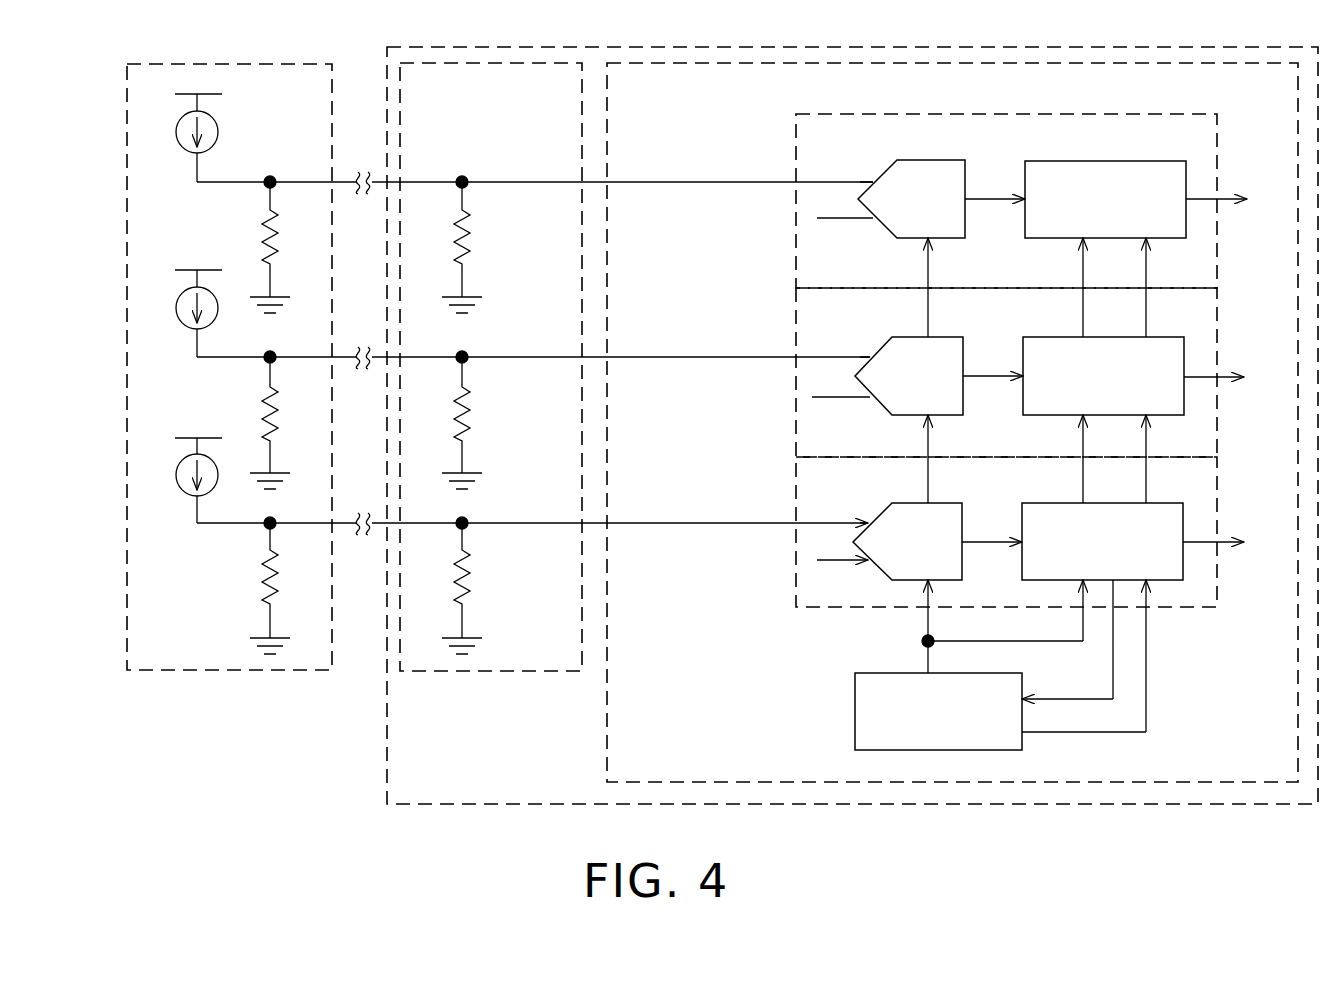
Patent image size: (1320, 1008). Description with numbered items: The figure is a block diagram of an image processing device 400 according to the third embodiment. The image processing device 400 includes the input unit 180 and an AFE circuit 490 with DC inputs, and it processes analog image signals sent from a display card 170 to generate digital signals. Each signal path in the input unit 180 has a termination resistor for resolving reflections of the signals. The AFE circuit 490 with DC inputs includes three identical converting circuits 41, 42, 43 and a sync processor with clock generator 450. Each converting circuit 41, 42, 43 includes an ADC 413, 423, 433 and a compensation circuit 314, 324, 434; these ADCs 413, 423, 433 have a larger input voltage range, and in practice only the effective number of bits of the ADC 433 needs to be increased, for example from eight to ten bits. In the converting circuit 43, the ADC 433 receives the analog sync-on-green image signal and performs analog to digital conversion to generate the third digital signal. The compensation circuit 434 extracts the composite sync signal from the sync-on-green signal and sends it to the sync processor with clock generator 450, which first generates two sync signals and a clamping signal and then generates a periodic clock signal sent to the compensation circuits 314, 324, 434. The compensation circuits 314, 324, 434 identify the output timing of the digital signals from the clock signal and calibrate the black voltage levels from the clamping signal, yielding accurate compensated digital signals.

The image processing device 400 is at (384, 718).
The display card 170 is at (332, 672).
The input unit 180 is at (565, 672).
The AFE circuit with DC inputs 490 is at (607, 782).
The converting circuit 41 is at (1217, 240).
The converting circuit 42 is at (1217, 330).
The converting circuit 43 is at (1217, 605).
The ADC 413 is at (941, 209).
The ADC 423 is at (939, 386).
The ADC 433 is at (938, 553).
The compensation circuit 314 is at (1190, 160).
The compensation circuit 324 is at (1188, 337).
The compensation circuit 434 is at (1186, 503).
The sync processor with clock generator 450 is at (855, 749).